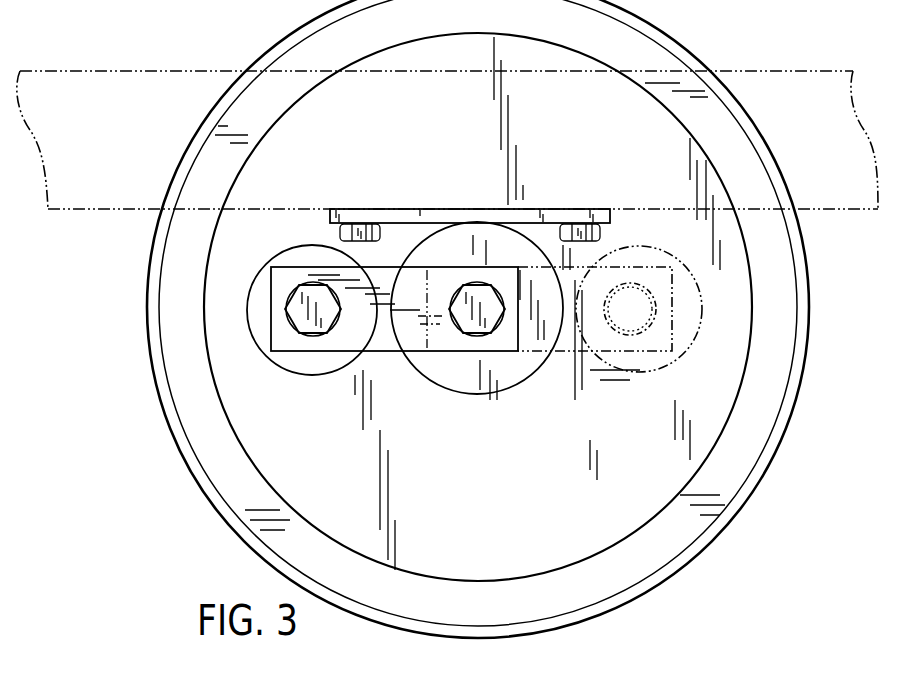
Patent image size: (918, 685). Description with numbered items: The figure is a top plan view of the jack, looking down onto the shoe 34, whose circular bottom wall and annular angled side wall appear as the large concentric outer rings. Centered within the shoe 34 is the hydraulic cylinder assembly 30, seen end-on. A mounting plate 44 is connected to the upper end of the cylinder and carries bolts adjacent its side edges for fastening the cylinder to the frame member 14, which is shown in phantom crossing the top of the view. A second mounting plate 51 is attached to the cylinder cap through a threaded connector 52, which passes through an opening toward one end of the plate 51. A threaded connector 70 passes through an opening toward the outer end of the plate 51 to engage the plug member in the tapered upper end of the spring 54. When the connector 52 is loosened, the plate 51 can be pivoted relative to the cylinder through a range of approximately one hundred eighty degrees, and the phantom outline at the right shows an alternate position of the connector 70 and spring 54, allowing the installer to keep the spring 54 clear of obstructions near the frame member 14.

The frame member 14 is at (752, 71).
The hydraulic cylinder assembly 30 is at (478, 396).
The shoe 34 is at (811, 306).
The mounting plate 44 is at (403, 225).
The mounting plate 51 is at (368, 357).
The threaded connector 52 is at (477, 338).
The spring 54 is at (257, 352).
The threaded connector 70 is at (313, 337).